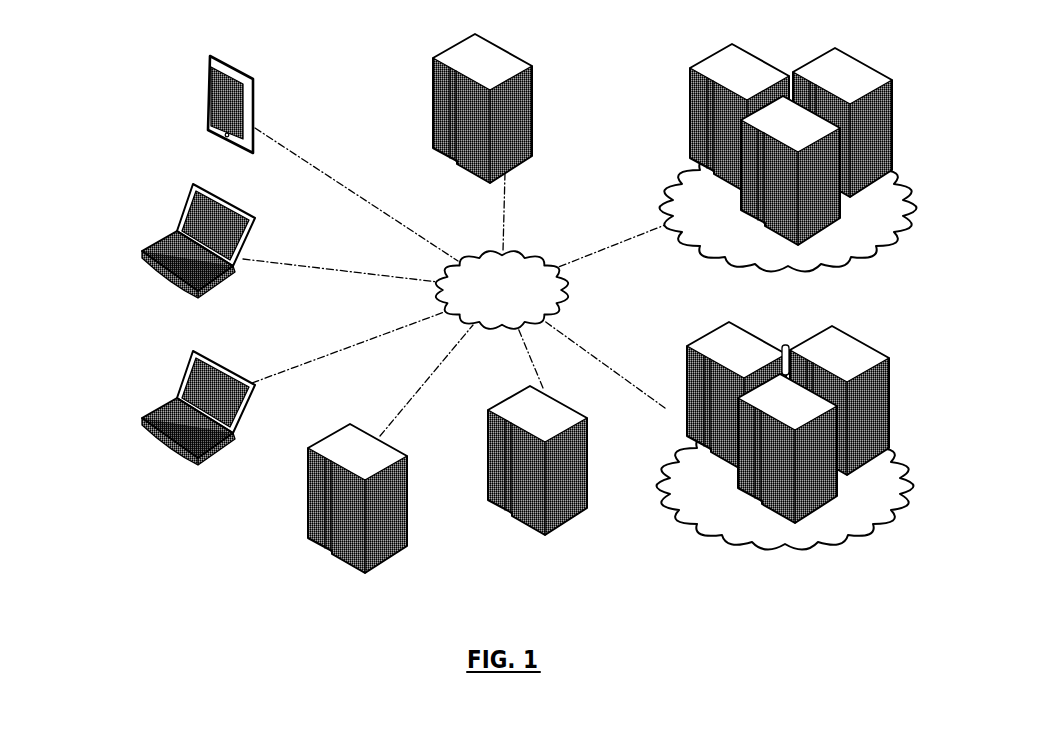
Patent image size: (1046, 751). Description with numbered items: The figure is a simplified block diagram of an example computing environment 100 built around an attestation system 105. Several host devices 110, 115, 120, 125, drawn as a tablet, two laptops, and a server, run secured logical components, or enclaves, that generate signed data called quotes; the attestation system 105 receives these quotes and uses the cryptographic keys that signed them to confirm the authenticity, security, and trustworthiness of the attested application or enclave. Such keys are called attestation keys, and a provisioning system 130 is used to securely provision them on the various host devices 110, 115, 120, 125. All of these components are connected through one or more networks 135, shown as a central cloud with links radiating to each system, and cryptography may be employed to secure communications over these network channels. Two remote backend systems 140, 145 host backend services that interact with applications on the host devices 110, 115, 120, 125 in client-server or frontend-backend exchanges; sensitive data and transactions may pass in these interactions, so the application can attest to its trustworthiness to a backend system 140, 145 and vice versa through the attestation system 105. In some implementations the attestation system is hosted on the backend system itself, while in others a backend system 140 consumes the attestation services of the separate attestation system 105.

The computing environment 100 is at (95, 51).
The attestation system 105 is at (513, 513).
The host device 110 is at (254, 80).
The host device 115 is at (205, 289).
The host device 120 is at (205, 455).
The host device 125 is at (333, 549).
The provisioning system 130 is at (433, 108).
The network 135 is at (538, 253).
The backend system 140 is at (857, 57).
The backend system 145 is at (854, 334).